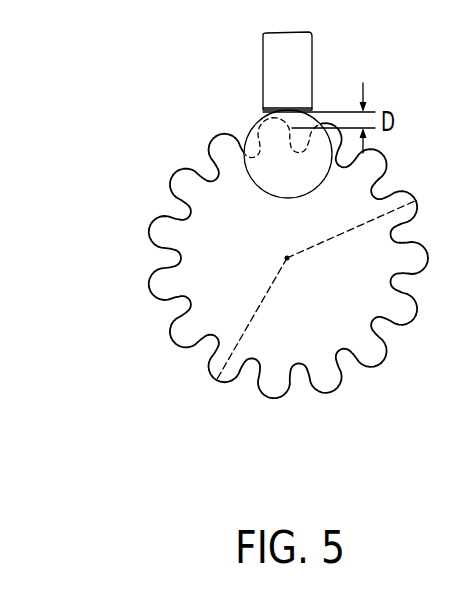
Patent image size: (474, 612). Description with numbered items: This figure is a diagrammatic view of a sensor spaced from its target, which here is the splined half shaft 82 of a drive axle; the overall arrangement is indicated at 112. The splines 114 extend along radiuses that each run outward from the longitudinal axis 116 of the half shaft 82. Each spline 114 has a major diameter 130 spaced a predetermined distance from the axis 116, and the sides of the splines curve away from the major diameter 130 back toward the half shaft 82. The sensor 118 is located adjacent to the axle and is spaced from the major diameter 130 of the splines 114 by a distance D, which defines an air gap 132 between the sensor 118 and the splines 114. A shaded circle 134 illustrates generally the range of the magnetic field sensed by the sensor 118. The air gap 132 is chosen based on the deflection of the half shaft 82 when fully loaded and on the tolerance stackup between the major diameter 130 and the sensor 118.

The half shaft 82 is at (288, 263).
The detent assembly 112 is at (154, 397).
The splines 114 is at (150, 216).
The longitudinal axis 116 is at (288, 264).
The sensor 118 is at (302, 58).
The major diameter 130 is at (418, 200).
The air gap 132 is at (262, 113).
The shaded circle 134 is at (236, 130).